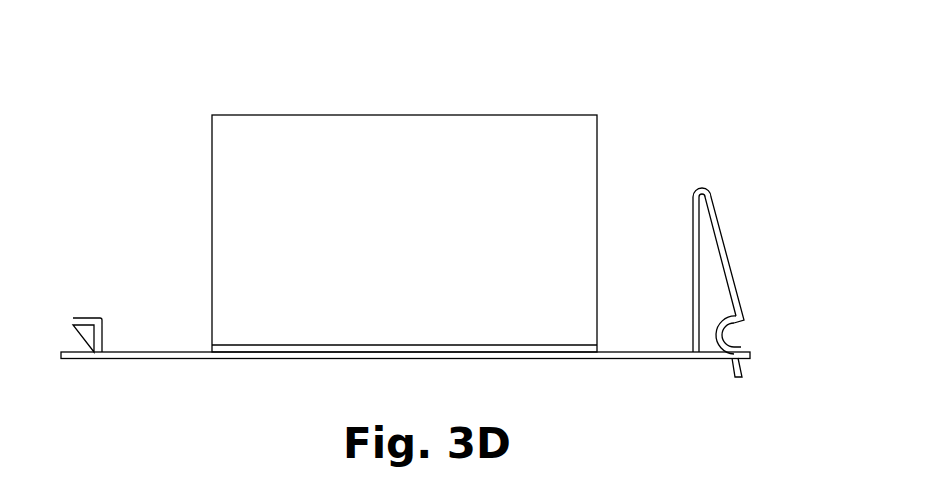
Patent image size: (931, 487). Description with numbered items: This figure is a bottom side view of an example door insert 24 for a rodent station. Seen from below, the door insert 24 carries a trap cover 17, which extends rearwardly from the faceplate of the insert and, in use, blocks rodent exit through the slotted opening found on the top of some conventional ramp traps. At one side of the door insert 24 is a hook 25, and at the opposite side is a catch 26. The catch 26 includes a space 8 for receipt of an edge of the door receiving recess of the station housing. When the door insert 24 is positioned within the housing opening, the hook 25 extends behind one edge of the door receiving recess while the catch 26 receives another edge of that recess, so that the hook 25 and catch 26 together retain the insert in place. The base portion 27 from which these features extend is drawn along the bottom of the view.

The door insert 24 is at (587, 69).
The trap cover 17 is at (308, 115).
The hook 25 is at (94, 318).
The catch 26 is at (727, 255).
The space 8 is at (724, 334).
The base plate 27 is at (635, 359).